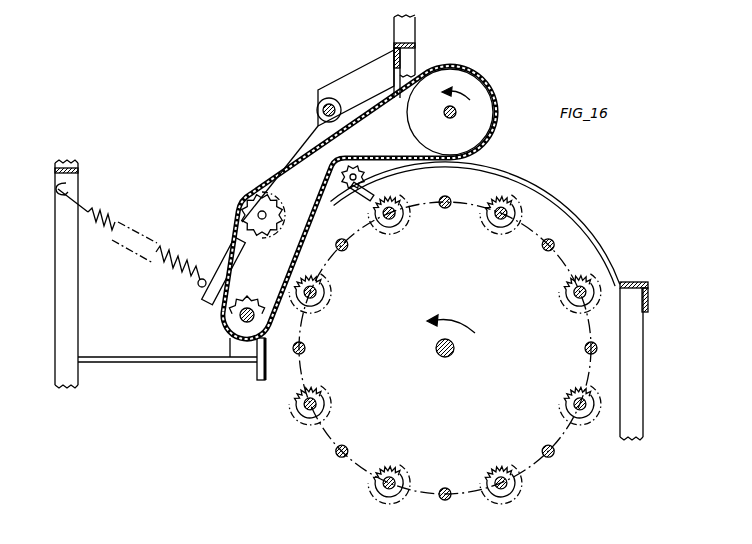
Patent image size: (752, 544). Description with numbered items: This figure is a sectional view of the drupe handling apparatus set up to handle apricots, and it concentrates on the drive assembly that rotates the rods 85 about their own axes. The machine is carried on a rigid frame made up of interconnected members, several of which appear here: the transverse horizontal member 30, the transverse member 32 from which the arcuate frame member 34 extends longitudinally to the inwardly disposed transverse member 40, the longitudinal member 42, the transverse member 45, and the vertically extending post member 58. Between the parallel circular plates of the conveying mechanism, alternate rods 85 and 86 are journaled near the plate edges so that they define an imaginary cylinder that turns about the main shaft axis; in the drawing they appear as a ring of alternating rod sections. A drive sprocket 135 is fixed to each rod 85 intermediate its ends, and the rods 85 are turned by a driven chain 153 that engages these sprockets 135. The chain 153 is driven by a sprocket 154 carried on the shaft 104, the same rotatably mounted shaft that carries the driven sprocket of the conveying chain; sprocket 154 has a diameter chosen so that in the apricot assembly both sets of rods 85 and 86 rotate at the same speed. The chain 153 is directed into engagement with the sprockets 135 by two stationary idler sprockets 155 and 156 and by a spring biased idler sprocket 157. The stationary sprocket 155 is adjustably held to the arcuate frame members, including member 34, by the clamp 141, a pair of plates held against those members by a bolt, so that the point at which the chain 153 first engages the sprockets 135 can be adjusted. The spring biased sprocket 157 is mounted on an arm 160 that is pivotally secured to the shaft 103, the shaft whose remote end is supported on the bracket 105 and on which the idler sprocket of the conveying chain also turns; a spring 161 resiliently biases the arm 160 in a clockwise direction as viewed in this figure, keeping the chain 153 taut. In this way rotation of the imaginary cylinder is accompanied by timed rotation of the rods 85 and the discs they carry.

The transversely extending horizontal member 30 is at (56, 185).
The transverse member 32 is at (630, 283).
The arcuate frame member 34 is at (572, 208).
The transverse member 40 is at (250, 370).
The longitudinal member 42 is at (168, 364).
The transverse member 45 is at (416, 40).
The vertically extending post member 58 is at (62, 291).
The rods 85 is at (402, 203).
The rods 86 is at (446, 209).
The shaft 103 is at (318, 112).
The shaft 104 is at (457, 113).
The bracket 105 is at (365, 70).
The drive sprockets 135 is at (392, 234).
The clamp 141 is at (359, 203).
The driven chain 153 is at (272, 182).
The sprocket 154 is at (470, 86).
The stationary idler sprocket 155 is at (355, 166).
The stationary idler sprocket 156 is at (240, 317).
The spring biased idler sprocket 157 is at (250, 213).
The arm 160 is at (224, 265).
The spring 161 is at (112, 215).